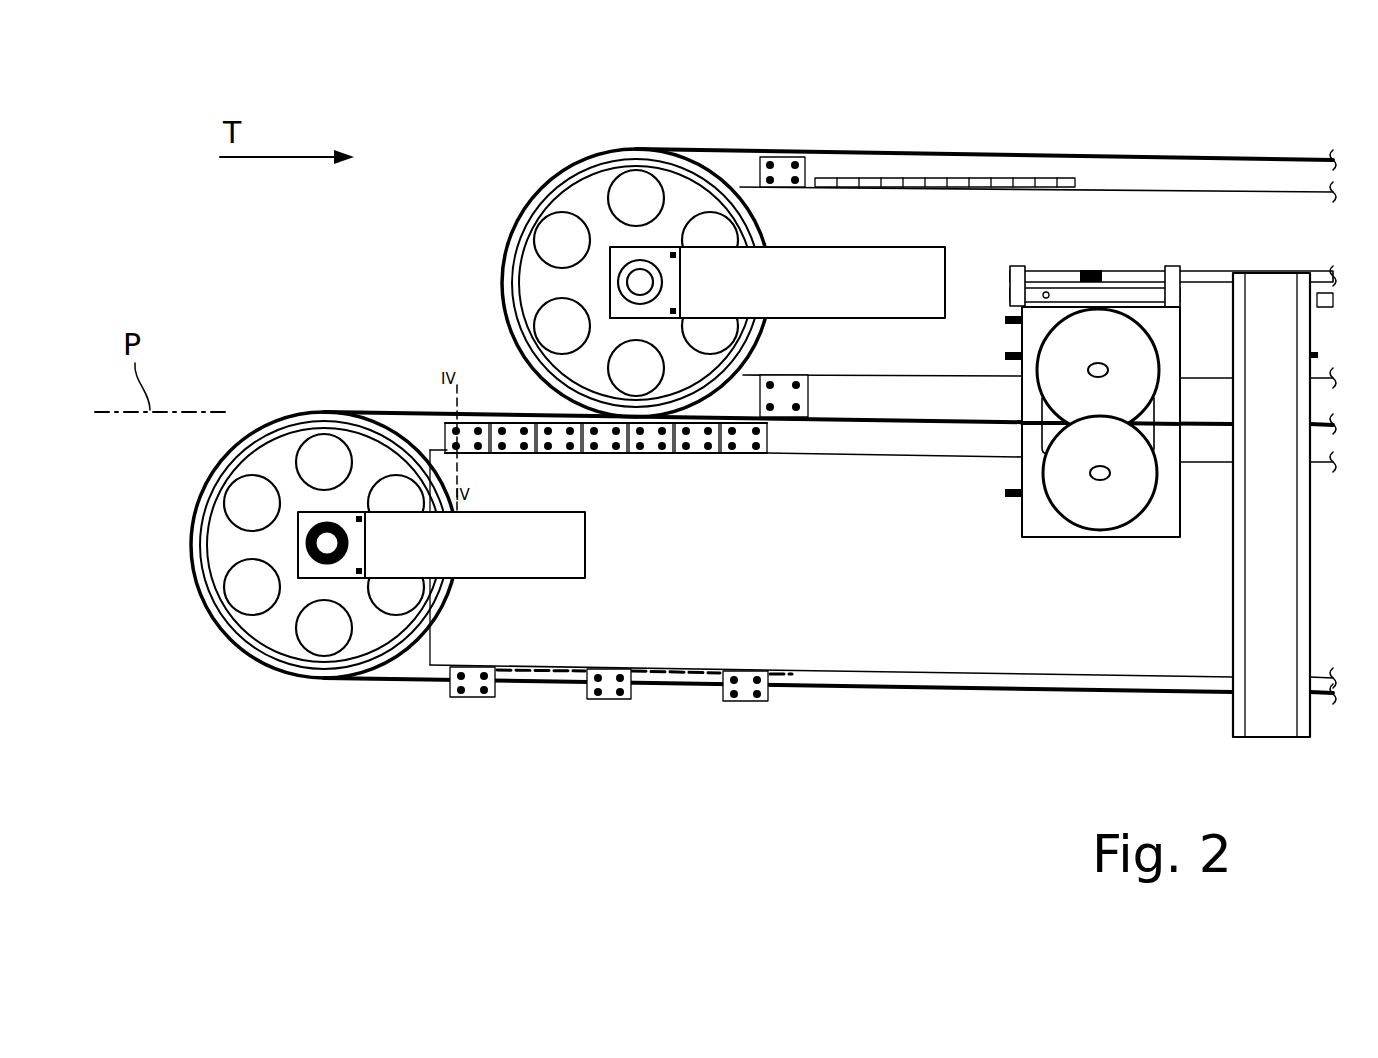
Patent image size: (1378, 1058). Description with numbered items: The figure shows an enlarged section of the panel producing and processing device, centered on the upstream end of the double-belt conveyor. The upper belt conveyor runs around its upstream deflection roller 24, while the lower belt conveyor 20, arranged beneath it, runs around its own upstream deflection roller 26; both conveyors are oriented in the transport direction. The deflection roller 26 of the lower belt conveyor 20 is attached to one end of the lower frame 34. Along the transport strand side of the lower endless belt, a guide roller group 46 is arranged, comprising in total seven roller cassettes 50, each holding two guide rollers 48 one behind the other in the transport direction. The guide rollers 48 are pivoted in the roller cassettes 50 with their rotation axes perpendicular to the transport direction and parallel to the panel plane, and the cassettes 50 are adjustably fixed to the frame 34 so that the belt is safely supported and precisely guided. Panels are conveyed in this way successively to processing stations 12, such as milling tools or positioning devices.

The processing station 12 is at (1082, 503).
The lower belt conveyor 20 is at (886, 652).
The upstream deflection roller 24 is at (592, 190).
The upstream deflection roller 26 is at (272, 460).
The lower frame 34 is at (848, 605).
The guide roller group 46 is at (740, 485).
The guide roller 48 is at (500, 420).
The roller cassette 50 is at (612, 455).